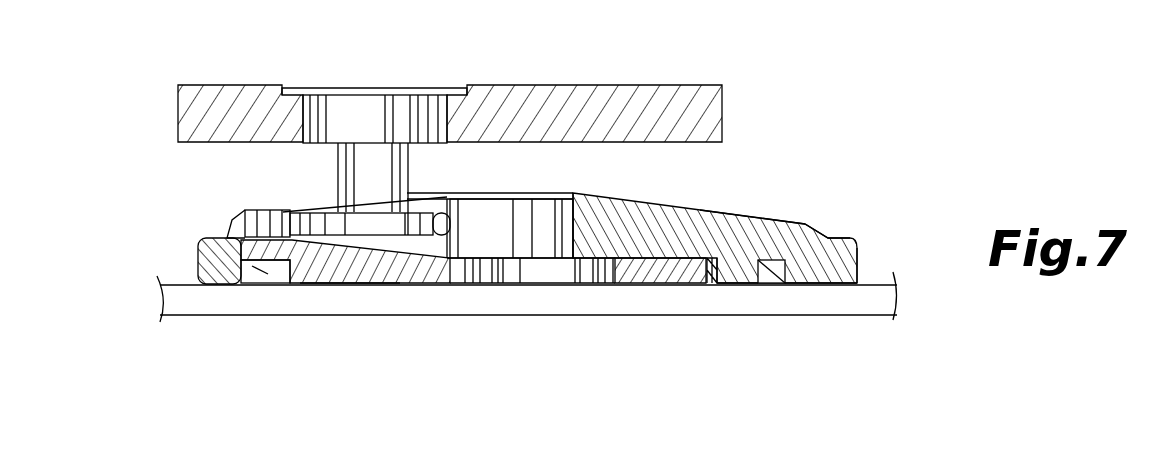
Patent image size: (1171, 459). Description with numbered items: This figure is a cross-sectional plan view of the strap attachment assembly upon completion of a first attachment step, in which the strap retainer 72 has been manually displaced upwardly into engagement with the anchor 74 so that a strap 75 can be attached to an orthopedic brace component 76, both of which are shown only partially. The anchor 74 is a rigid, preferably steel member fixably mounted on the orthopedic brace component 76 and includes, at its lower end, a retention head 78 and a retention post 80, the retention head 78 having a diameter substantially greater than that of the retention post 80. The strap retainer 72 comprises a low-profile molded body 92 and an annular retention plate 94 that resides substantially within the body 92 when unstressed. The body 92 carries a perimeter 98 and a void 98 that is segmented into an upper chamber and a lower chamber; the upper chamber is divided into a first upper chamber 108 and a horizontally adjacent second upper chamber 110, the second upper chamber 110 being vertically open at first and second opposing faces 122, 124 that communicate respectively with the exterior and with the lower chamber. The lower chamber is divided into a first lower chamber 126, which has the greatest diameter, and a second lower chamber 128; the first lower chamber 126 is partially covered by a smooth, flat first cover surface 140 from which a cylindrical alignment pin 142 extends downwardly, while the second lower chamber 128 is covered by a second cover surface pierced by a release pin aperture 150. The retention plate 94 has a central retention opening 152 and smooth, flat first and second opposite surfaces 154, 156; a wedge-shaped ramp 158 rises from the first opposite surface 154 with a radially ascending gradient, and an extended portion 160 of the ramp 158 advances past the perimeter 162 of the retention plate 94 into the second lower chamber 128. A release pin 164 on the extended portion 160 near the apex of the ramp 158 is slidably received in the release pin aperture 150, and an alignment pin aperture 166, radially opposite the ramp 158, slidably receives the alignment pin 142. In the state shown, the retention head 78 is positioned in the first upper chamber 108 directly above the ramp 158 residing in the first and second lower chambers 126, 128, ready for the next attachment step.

The strap retainer 72 is at (754, 252).
The anchor 74 is at (373, 100).
The strap 75 is at (606, 303).
The orthopedic brace component 76 is at (684, 85).
The retention head 78 is at (547, 214).
The retention post 80 is at (410, 160).
The body 92 is at (853, 243).
The retention plate 94 is at (656, 287).
The void 98 is at (203, 238).
The first upper chamber 108 is at (436, 225).
The second upper chamber 110 is at (573, 232).
The first opposing face 122 is at (336, 206).
The second opposing face 124 is at (585, 192).
The first lower chamber 126 is at (733, 287).
The second lower chamber 128 is at (256, 285).
The first cover surface 140 is at (783, 260).
The alignment pin 142 is at (747, 287).
The release pin aperture 150 is at (236, 234).
The retention opening 152 is at (546, 290).
The first opposite surface 154 is at (640, 257).
The second opposite surface 156 is at (418, 287).
The ramp 158 is at (350, 287).
The extended portion 160 is at (268, 287).
The perimeter 162 is at (857, 258).
The release pin 164 is at (260, 213).
The alignment pin aperture 166 is at (793, 287).